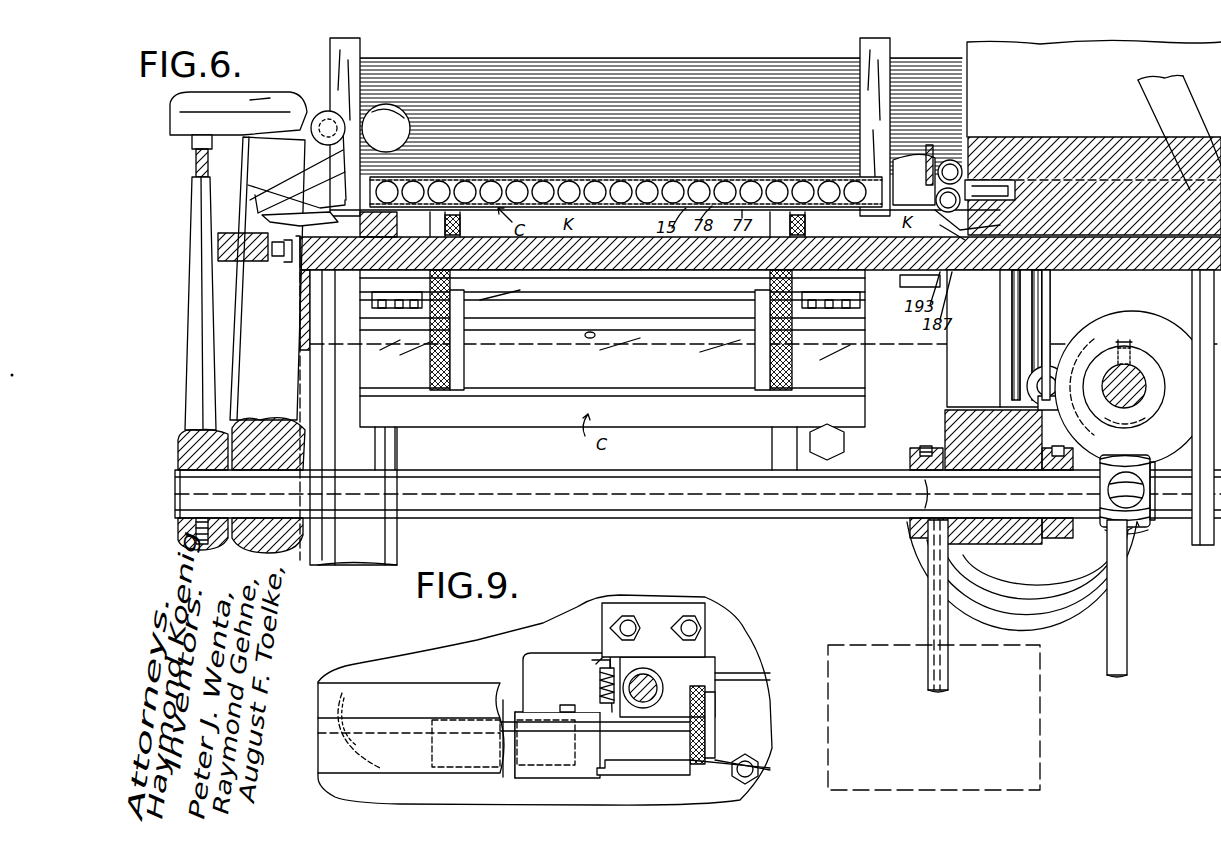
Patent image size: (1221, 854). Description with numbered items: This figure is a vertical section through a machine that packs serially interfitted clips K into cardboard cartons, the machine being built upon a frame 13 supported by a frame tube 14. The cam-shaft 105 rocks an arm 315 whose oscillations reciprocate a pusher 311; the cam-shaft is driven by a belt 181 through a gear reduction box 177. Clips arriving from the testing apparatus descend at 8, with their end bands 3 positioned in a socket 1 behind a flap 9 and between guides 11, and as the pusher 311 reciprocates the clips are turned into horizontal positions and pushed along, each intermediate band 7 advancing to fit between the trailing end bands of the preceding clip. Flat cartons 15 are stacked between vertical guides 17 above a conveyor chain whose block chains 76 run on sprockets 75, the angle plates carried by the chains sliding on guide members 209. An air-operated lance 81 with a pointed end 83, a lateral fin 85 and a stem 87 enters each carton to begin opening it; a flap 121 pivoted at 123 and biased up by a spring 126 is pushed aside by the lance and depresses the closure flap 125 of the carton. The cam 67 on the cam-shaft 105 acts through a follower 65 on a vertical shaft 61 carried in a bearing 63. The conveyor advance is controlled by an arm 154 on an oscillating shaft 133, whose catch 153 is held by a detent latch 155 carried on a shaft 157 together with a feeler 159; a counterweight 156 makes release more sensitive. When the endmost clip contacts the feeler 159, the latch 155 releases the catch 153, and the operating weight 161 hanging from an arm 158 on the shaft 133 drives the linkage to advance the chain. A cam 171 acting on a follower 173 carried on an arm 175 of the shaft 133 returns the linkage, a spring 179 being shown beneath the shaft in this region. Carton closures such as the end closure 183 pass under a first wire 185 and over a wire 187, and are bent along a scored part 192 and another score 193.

In FIG. 6, the socket 1 is at (998, 338).
In FIG. 6, the end band 3 is at (958, 228).
In FIG. 6, the intermediate band 7 is at (948, 160).
In FIG. 6, the descent point 8 is at (960, 162).
In FIG. 6, the flap 9 is at (926, 168).
In FIG. 6, the guides 11 is at (665, 193).
In FIG. 6, the bed plate 13 is at (915, 272).
In FIG. 9, the bed plate 13 is at (447, 650).
In FIG. 6, the frame tube 14 is at (388, 530).
In FIG. 6, the carton 15 is at (626, 75).
In FIG. 9, the carton 15 is at (400, 692).
In FIG. 6, the vertical guide 17 is at (357, 50).
In FIG. 6, the vertical shaft 61 is at (1046, 312).
In FIG. 9, the vertical shaft 61 is at (645, 678).
In FIG. 9, the bearing 63 is at (664, 675).
In FIG. 6, the follower 65 is at (1052, 372).
In FIG. 6, the cam 67 is at (1072, 350).
In FIG. 6, the sprocket 75 is at (455, 390).
In FIG. 6, the block chain 76 is at (440, 385).
In FIG. 9, the air-operated lance 81 is at (507, 712).
In FIG. 9, the pointed end 83 is at (359, 724).
In FIG. 9, the lateral fin 85 is at (405, 768).
In FIG. 9, the stem 87 is at (660, 727).
In FIG. 6, the cam-shaft 105 is at (1134, 378).
In FIG. 9, the flap 121 is at (552, 712).
In FIG. 9, the pivot 123 is at (612, 770).
In FIG. 6, the closure flap 125 is at (990, 272).
In FIG. 9, the closure flap 125 is at (510, 770).
In FIG. 9, the spring 126 is at (598, 676).
In FIG. 6, the oscillating shaft 133 is at (732, 498).
In FIG. 6, the catch 153 is at (196, 150).
In FIG. 6, the arm 154 is at (196, 340).
In FIG. 6, the detent latch 155 is at (170, 115).
In FIG. 6, the counterweight 156 is at (390, 108).
In FIG. 6, the shaft 157 is at (316, 125).
In FIG. 6, the arm 158 is at (918, 452).
In FIG. 6, the feeler 159 is at (310, 176).
In FIG. 6, the operating weight 161 is at (900, 644).
In FIG. 6, the cam 171 is at (1147, 491).
In FIG. 6, the follower 173 is at (1148, 520).
In FIG. 6, the arm 175 is at (1130, 537).
In FIG. 6, the gear reduction box 177 is at (812, 442).
In FIG. 6, the spring 179 is at (1042, 622).
In FIG. 6, the belt 181 is at (945, 670).
In FIG. 6, the end closure 183 is at (262, 218).
In FIG. 6, the first wire 185 is at (240, 204).
In FIG. 6, the wire 187 is at (243, 236).
In FIG. 6, the scored part 192 is at (285, 243).
In FIG. 6, the score 193 is at (358, 220).
In FIG. 6, the guide member 209 is at (372, 278).
In FIG. 6, the pusher 311 is at (998, 188).
In FIG. 6, the arm 315 is at (1172, 78).